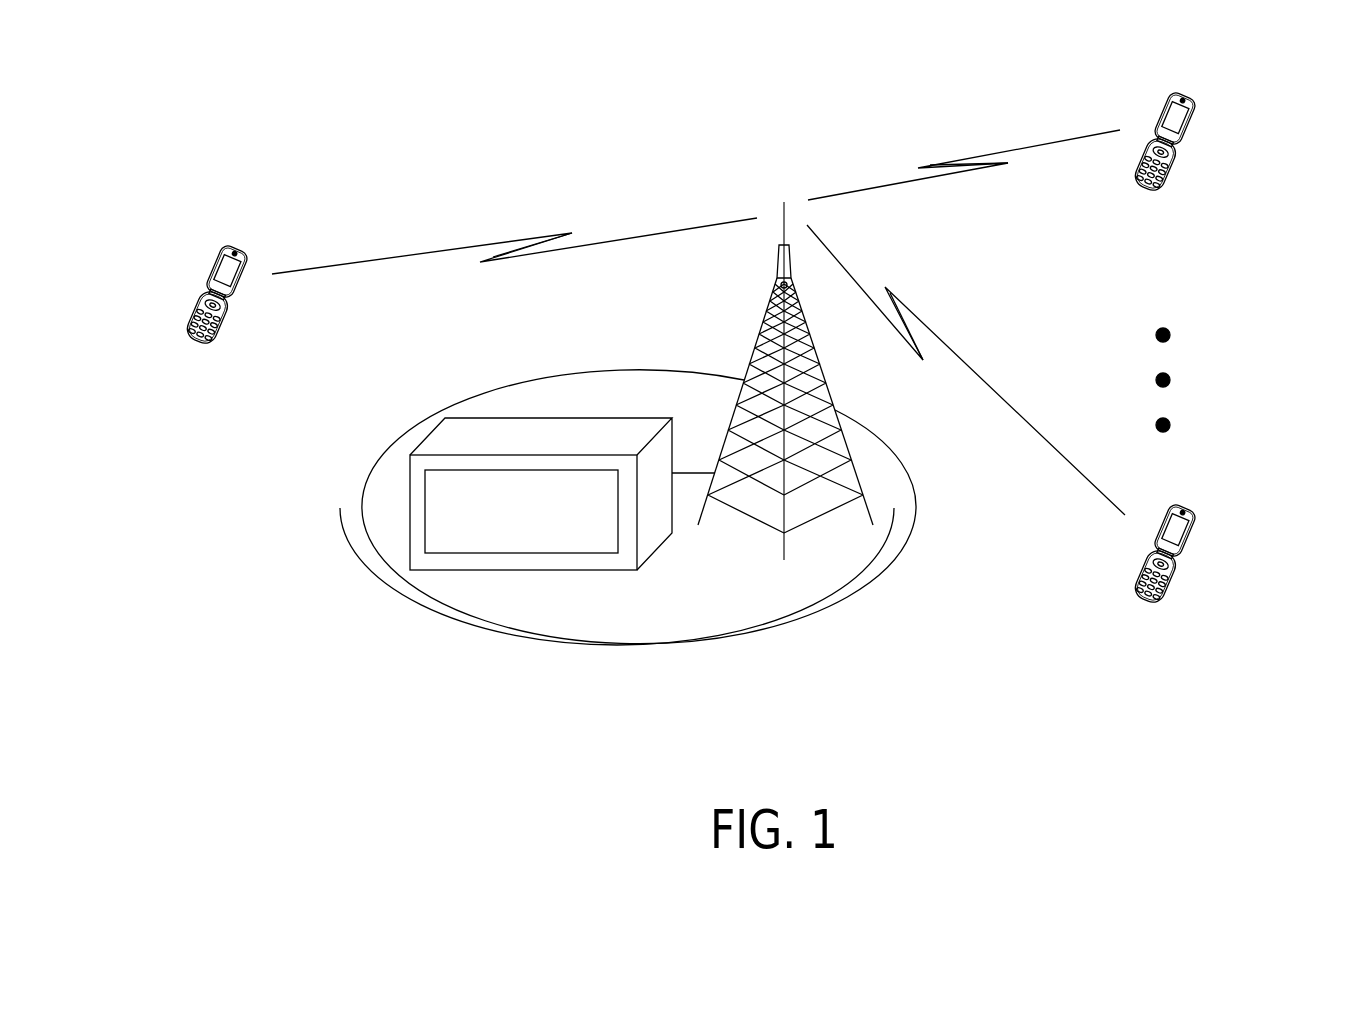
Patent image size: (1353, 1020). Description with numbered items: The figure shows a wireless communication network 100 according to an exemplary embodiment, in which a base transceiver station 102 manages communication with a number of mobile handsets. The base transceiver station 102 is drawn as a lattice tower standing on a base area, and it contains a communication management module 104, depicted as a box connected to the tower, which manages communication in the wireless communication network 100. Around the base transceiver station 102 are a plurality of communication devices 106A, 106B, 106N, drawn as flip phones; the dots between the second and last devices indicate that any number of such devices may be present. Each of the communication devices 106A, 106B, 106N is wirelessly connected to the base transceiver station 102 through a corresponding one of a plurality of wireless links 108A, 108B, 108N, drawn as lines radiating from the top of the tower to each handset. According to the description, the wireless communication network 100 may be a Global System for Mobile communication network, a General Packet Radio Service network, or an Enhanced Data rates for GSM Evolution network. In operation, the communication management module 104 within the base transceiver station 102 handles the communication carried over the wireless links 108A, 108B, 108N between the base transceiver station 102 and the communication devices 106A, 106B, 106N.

The wireless communication network 100 is at (1027, 746).
The base transceiver station 102 is at (793, 607).
The communication management module 104 is at (588, 547).
The communication device 106A is at (218, 344).
The communication device 106B is at (1165, 192).
The communication device 106N is at (1163, 604).
The wireless link 108A is at (630, 238).
The wireless link 108B is at (1017, 150).
The wireless link 108N is at (985, 380).